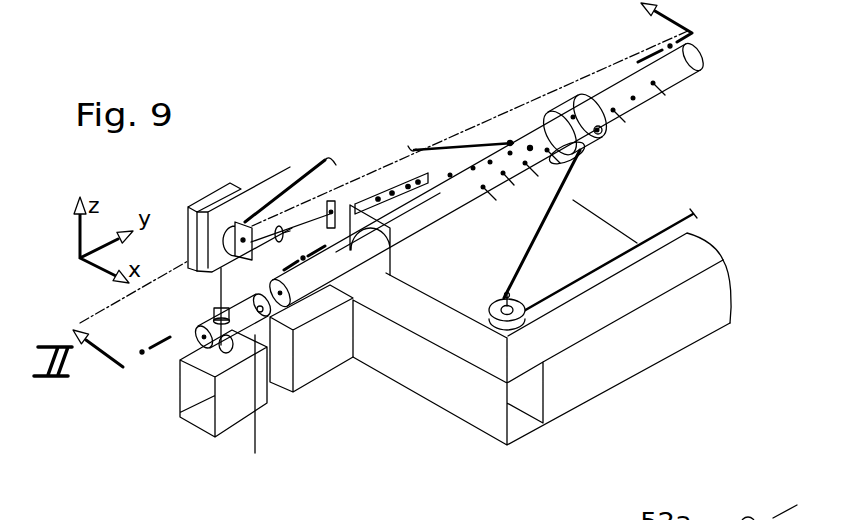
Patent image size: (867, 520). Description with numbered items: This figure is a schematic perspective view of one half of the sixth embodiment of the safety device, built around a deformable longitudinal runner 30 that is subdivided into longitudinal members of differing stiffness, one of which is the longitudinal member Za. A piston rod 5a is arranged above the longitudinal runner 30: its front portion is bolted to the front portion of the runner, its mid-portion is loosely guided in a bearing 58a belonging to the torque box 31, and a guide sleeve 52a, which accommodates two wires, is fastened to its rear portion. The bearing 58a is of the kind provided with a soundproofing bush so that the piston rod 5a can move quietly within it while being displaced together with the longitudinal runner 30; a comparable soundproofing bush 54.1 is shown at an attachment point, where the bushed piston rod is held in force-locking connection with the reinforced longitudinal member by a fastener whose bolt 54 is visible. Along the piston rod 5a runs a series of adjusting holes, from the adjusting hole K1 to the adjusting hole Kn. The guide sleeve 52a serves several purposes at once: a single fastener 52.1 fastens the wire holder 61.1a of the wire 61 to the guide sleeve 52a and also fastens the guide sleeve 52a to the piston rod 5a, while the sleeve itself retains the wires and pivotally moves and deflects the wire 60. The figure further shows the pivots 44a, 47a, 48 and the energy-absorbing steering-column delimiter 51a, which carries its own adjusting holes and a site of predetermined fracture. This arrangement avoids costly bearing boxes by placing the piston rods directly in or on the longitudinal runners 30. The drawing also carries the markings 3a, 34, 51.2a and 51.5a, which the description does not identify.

The guide block 3a is at (243, 405).
The piston rod 5a is at (548, 100).
The longitudinal runner 30 is at (317, 368).
The torque box 31 is at (213, 192).
The beam 34 is at (627, 350).
The pivot 44a is at (242, 222).
The pivot 47a is at (597, 157).
The pivot 48 is at (510, 300).
The energy-absorbing steering-column delimiter 51a is at (408, 183).
The marker 51.2a is at (512, 143).
The lever end 51.5a is at (377, 138).
The guide sleeve 52a is at (573, 117).
The fastener 52.1 is at (602, 132).
The bolt 54 is at (218, 308).
The soundproofing bush 54.1 is at (201, 324).
The bearing 58a is at (387, 258).
The wire 60 is at (567, 188).
The wire 61 is at (313, 163).
The wire holder 61.1a is at (500, 137).
The adjusting hole K1 is at (704, 106).
The adjusting hole Kn is at (557, 157).
The longitudinal member Za is at (252, 448).